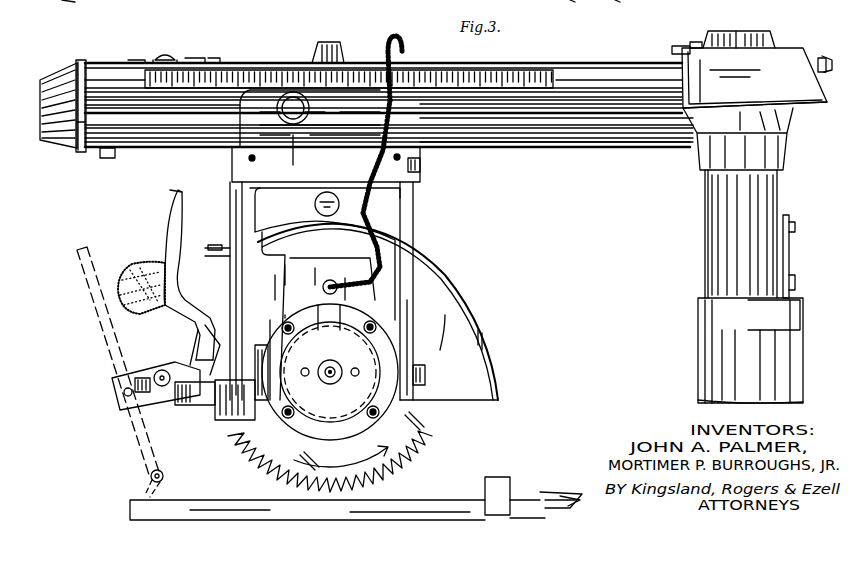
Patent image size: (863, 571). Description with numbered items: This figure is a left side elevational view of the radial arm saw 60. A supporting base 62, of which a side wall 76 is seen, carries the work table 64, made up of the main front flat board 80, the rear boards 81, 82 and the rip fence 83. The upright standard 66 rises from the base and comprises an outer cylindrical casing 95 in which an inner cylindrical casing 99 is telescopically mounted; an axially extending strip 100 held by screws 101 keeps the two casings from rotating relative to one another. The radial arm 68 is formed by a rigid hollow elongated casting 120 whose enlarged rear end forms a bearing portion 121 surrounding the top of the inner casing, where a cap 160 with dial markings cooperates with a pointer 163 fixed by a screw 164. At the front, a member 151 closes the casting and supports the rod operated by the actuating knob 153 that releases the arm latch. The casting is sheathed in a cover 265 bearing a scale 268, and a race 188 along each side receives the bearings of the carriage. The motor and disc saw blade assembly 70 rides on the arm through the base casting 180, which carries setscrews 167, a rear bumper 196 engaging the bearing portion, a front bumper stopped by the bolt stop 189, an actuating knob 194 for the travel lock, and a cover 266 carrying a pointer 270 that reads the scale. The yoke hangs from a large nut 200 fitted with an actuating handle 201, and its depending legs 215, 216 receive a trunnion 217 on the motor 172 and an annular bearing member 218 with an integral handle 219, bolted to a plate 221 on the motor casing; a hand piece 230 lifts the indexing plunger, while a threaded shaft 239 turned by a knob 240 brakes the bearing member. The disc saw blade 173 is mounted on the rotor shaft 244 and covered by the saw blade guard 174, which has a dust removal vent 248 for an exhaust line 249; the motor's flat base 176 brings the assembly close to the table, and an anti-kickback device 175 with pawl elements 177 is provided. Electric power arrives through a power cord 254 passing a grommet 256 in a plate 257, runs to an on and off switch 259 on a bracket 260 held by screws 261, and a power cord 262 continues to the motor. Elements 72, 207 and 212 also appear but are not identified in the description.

The radial arm saw 60 is at (577, 276).
The supporting base 62 is at (153, 9).
The work table 64 is at (534, 483).
The upright standard 66 is at (690, 352).
The radial arm 68 is at (560, 157).
The motor and disc saw blade assembly 70 is at (446, 246).
The upper frame 72 is at (626, 5).
The side wall 76 is at (583, 6).
The main front flat board 80 is at (130, 508).
The rear board 81 is at (545, 494).
The rear board 82 is at (575, 502).
The rip fence 83 is at (497, 478).
The outer cylindrical casing 95 is at (703, 384).
The inner cylindrical casing 99 is at (710, 213).
The axially extending strip 100 is at (790, 224).
The screws 101 is at (792, 280).
The rigid hollow elongated casting 120 is at (190, 105).
The bearing portion 121 is at (712, 160).
The member 151 is at (80, 160).
The actuating knob 153 is at (48, 72).
The cap 160 is at (735, 34).
The pointer 163 is at (697, 46).
The screw 164 is at (690, 48).
The setscrews 167 is at (247, 158).
The motor 172 is at (385, 337).
The disc saw blade 173 is at (445, 435).
The saw blade guard 174 is at (462, 355).
The anti-kickback device 175 is at (116, 418).
The flat base 176 is at (330, 432).
The pawl elements 177 is at (150, 478).
The base casting 180 is at (243, 172).
The race 188 is at (153, 142).
The bolt stop 189 is at (116, 158).
The actuating knob 194 is at (305, 135).
The rear bumper 196 is at (422, 168).
The large nut 200 is at (315, 200).
The actuating handle 201 is at (330, 193).
The yoke plate 207 is at (410, 190).
The clamp knob 212 is at (333, 40).
The leg 215 is at (412, 292).
The leg 216 is at (242, 262).
The trunnion 217 is at (418, 380).
The annular bearing member 218 is at (215, 420).
The integral handle 219 is at (165, 226).
The plate 221 is at (268, 400).
The hand piece 230 is at (215, 247).
The threaded shaft 239 is at (212, 340).
The knob 240 is at (178, 400).
The rotor shaft 244 is at (330, 378).
The dust removal vent 248 is at (195, 230).
The exhaust line 249 is at (140, 268).
The electric power cord 254 is at (828, 55).
The grommet 256 is at (815, 62).
The plate 257 is at (812, 88).
The on and off switch 259 is at (170, 58).
The bracket 260 is at (195, 60).
The screws 261 is at (137, 60).
The power cord 262 is at (385, 216).
The cover 265 is at (630, 72).
The cover 266 is at (352, 95).
The scale 268 is at (525, 62).
The pointer 270 is at (325, 92).